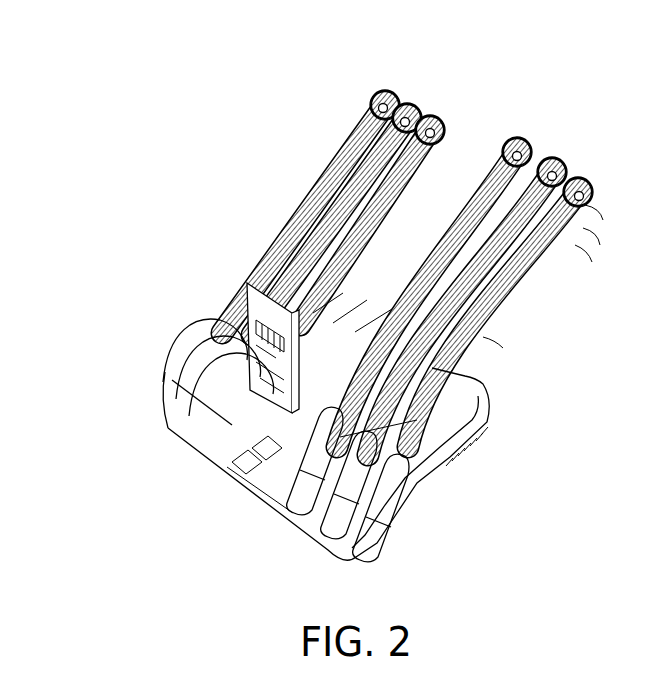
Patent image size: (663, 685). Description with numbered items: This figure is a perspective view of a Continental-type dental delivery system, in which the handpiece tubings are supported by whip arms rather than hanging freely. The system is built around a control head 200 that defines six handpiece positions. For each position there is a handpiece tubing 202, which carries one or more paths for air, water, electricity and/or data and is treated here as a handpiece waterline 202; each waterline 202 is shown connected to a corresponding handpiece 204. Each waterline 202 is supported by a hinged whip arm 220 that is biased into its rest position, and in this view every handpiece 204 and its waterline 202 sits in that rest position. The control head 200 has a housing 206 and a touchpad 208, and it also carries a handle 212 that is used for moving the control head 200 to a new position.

The control head 200 is at (137, 550).
The handpiece tubing 202 is at (576, 178).
The handpiece 204 is at (177, 386).
The housing 206 is at (350, 310).
The touchpad 208 is at (244, 297).
The handle 212 is at (241, 476).
The hinged whip arm 220 is at (497, 312).